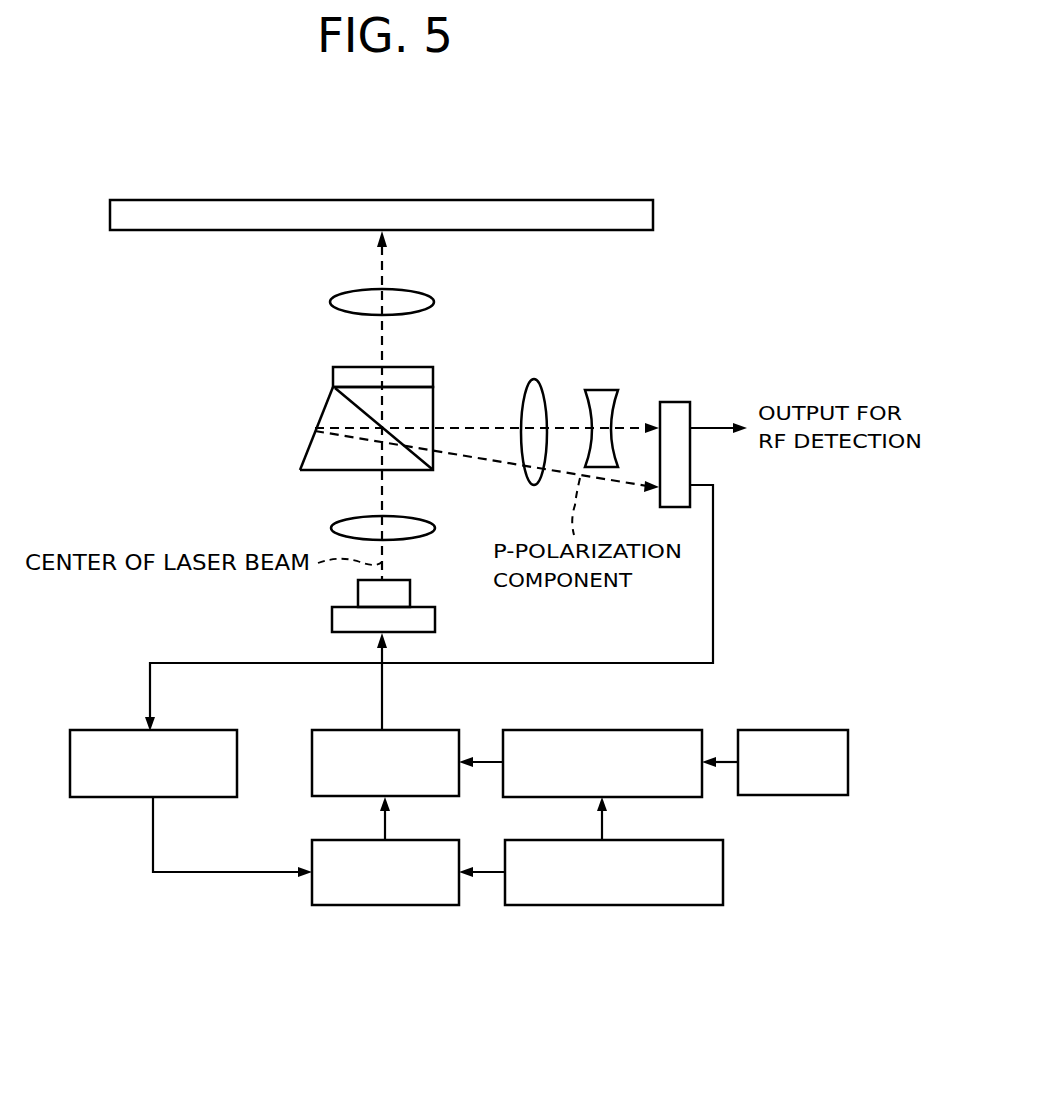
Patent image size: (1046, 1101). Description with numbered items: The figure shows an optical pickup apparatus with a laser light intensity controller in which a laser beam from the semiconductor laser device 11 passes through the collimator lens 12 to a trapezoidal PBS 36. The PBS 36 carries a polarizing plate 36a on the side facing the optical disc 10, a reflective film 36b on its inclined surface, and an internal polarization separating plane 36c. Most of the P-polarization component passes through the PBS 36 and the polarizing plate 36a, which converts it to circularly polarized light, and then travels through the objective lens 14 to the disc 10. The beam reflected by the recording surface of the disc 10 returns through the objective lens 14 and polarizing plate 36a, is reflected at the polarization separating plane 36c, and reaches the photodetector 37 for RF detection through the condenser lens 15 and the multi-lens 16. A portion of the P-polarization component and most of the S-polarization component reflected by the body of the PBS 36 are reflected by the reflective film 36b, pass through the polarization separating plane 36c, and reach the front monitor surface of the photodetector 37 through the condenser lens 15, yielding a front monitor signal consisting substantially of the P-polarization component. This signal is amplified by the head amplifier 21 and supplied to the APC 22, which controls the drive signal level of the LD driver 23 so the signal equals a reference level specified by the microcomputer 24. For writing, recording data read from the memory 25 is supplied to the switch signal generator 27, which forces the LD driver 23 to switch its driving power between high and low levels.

The optical disc 10 is at (590, 199).
The objective lens 14 is at (432, 300).
The PBS 36 is at (278, 451).
The polarizing plate 36a is at (345, 367).
The reflective film 36b is at (312, 440).
The polarization separating plane 36c is at (430, 452).
The condenser lens 15 is at (534, 378).
The multi-lens 16 is at (603, 390).
The photodetector 37 is at (678, 402).
The collimator lens 12 is at (435, 527).
The semiconductor laser device 11 is at (435, 620).
The head amplifier 21 is at (105, 730).
The LD driver 23 is at (430, 730).
The switch signal generator 27 is at (615, 730).
The memory 25 is at (782, 730).
The APC 22 is at (357, 905).
The microcomputer 24 is at (555, 905).